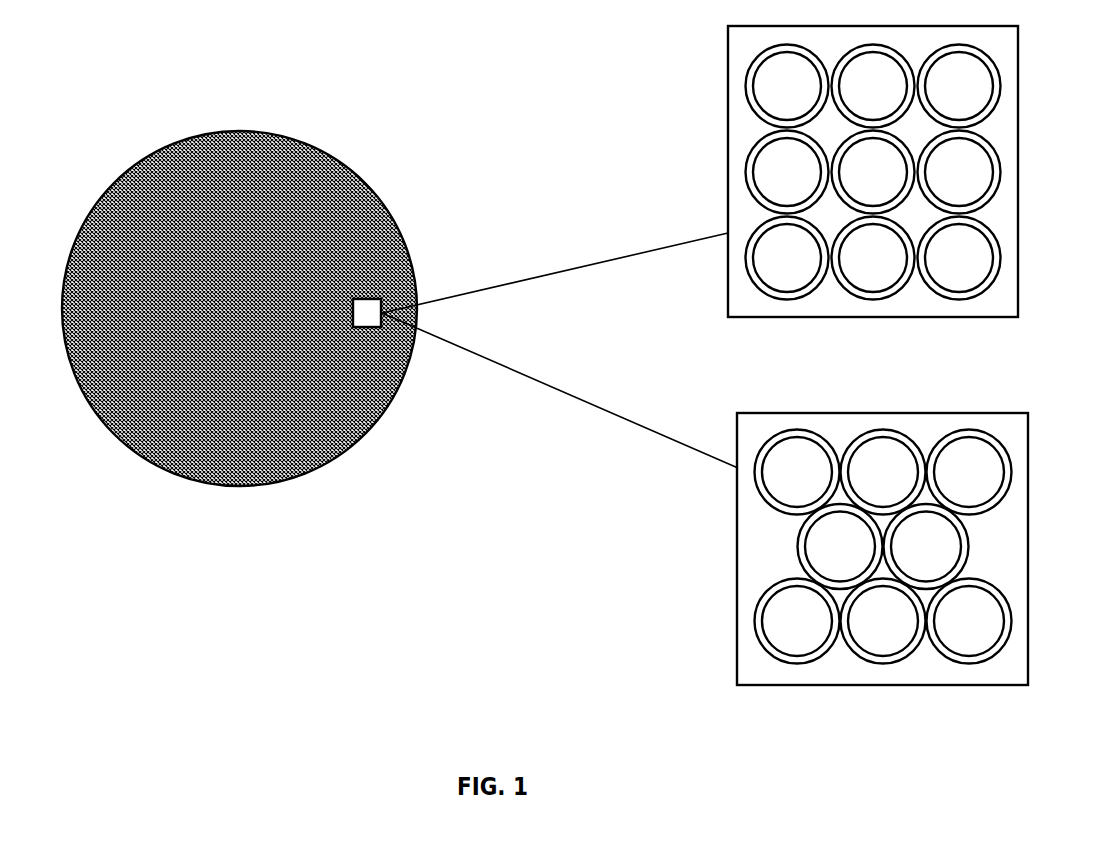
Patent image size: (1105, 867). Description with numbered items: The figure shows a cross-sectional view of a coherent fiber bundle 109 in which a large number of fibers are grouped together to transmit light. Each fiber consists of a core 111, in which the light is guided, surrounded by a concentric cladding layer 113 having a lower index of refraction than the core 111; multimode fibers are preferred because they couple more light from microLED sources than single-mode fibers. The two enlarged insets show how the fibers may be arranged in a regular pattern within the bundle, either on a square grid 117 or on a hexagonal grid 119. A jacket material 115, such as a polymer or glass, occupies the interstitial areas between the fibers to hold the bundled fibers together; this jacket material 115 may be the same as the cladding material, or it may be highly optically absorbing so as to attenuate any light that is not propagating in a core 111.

The coherent fiber bundle 109 is at (340, 162).
The core 111 is at (783, 85).
The cladding layer 113 is at (758, 118).
The jacket material 115 is at (741, 206).
The square grid 117 is at (848, 171).
The hexagonal grid 119 is at (1029, 550).